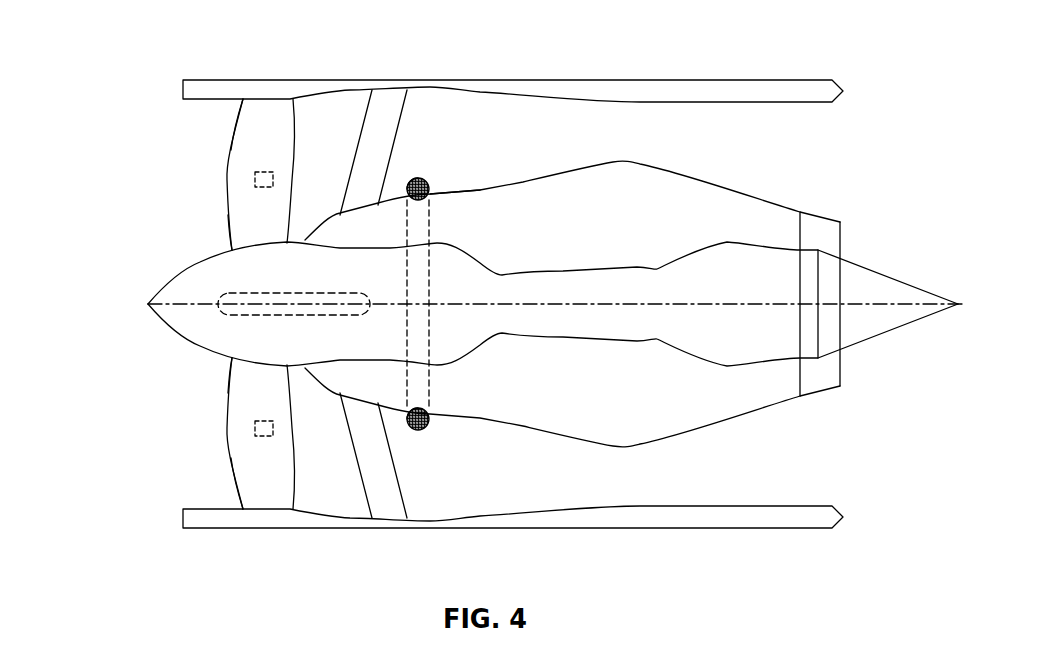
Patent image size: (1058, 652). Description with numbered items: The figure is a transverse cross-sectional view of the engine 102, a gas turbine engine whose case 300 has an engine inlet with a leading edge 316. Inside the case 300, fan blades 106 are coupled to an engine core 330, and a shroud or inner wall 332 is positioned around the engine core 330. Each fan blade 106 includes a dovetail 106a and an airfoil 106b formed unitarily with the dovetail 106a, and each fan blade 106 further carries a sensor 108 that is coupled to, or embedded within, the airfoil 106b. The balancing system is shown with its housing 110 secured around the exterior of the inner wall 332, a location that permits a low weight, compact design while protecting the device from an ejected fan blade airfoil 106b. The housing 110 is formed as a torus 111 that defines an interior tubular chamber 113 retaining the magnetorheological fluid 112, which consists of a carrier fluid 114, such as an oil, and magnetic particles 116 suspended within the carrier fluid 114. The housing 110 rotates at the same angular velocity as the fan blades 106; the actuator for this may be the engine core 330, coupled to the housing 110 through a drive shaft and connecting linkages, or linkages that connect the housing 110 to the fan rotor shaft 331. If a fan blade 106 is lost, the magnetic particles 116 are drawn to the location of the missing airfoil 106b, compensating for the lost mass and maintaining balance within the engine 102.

The engine 102 is at (150, 44).
The case 300 is at (300, 79).
The leading edge 316 is at (193, 509).
The engine core 330 is at (157, 288).
The fan rotor shaft 331 is at (315, 292).
The inner wall 332 is at (523, 182).
The fan blade 106 is at (240, 178).
The dovetail 106a is at (230, 228).
The airfoil 106b is at (248, 118).
The sensor 108 is at (273, 180).
The housing 110 is at (425, 178).
The torus 111 is at (432, 192).
The interior tubular chamber 113 is at (400, 182).
The carrier fluid 114 is at (432, 420).
The magnetorheological fluid 112 is at (400, 397).
The magnetic particles 116 is at (420, 428).